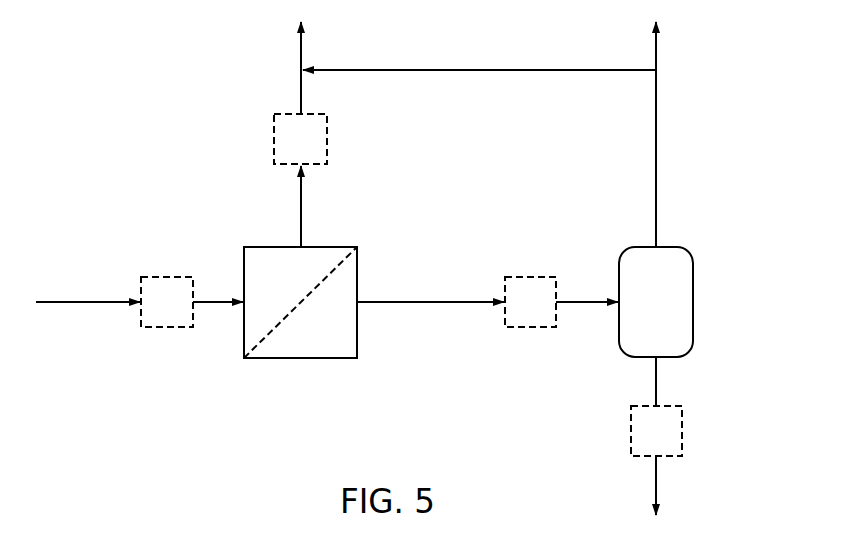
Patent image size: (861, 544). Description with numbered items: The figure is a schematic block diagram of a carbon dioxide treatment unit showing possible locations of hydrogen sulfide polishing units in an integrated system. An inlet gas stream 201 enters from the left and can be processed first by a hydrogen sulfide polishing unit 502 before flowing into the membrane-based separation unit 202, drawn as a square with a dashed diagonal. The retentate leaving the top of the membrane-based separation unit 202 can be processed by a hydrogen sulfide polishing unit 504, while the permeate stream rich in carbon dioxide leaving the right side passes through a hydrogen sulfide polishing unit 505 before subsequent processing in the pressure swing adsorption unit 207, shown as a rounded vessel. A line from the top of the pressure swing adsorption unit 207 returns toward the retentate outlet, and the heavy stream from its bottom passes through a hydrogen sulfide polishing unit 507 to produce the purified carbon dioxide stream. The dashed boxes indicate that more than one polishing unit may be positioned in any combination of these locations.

The inlet gas stream 201 is at (99, 297).
The hydrogen sulfide polishing unit 502 is at (162, 329).
The membrane-based separation unit 202 is at (332, 246).
The hydrogen sulfide polishing unit 504 is at (327, 128).
The hydrogen sulfide polishing unit 505 is at (528, 276).
The pressure swing adsorption unit 207 is at (669, 246).
The hydrogen sulfide polishing unit 507 is at (682, 430).